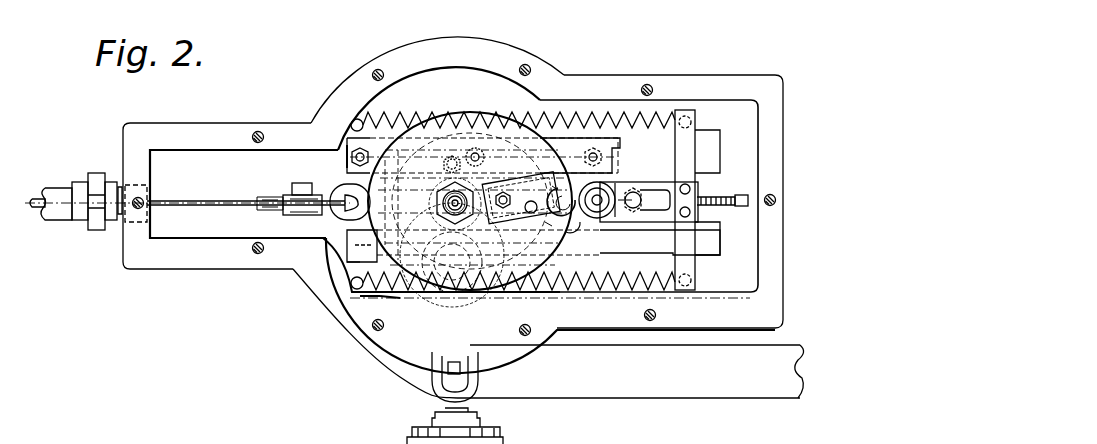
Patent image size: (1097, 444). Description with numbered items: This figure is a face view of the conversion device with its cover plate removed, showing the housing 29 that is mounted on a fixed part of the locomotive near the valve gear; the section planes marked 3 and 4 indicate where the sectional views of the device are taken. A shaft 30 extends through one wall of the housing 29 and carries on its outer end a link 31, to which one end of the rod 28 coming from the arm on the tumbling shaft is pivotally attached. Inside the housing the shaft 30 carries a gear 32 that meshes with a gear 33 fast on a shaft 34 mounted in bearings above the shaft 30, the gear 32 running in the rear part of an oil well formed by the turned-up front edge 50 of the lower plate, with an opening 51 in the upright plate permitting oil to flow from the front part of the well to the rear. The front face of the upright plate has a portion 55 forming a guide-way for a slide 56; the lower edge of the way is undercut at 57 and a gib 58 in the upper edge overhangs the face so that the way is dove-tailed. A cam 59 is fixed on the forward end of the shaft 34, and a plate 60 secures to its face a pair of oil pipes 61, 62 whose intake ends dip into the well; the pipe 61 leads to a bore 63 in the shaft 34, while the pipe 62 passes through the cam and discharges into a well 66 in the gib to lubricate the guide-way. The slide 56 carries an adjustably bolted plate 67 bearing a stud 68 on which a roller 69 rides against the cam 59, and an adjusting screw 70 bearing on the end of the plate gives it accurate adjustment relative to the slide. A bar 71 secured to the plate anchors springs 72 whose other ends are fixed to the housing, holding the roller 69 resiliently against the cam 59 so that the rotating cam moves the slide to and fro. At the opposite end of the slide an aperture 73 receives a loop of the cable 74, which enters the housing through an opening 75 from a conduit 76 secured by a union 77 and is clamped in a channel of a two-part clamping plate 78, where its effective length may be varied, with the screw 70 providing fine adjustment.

The section line 3- 3 is at (44, 182).
The section line 4- 4 is at (453, 12).
The rod 28 is at (709, 392).
The housing of the conversion device 29 is at (341, 84).
The shaft 30 is at (452, 299).
The link 31 is at (482, 378).
The gear 32 is at (398, 300).
The gear 33 is at (448, 196).
The shaft 34 is at (470, 208).
The turned-up front edge 50 is at (370, 303).
The opening 51 is at (487, 315).
The portion forming a guide-way 55 is at (348, 138).
The slide 56 is at (584, 182).
The undercut 57 is at (347, 288).
The gib 58 is at (344, 156).
The cam 59 is at (531, 147).
The plate 60 is at (548, 228).
The oil pipe 61 is at (555, 190).
The oil pipe 62 is at (558, 188).
The bore 63 is at (450, 203).
The well 66 is at (458, 158).
The plate 67 is at (664, 215).
The stud 68 is at (596, 219).
The roller 69 is at (608, 222).
The adjusting screw 70 is at (721, 199).
The bar 71 is at (698, 128).
The springs 72 is at (660, 128).
The aperture 73 is at (347, 214).
The push rod 74 is at (220, 207).
The opening 75 is at (143, 224).
The conduit 76 is at (60, 216).
The union 77 is at (95, 173).
The two-part clamping plate 78 is at (297, 186).